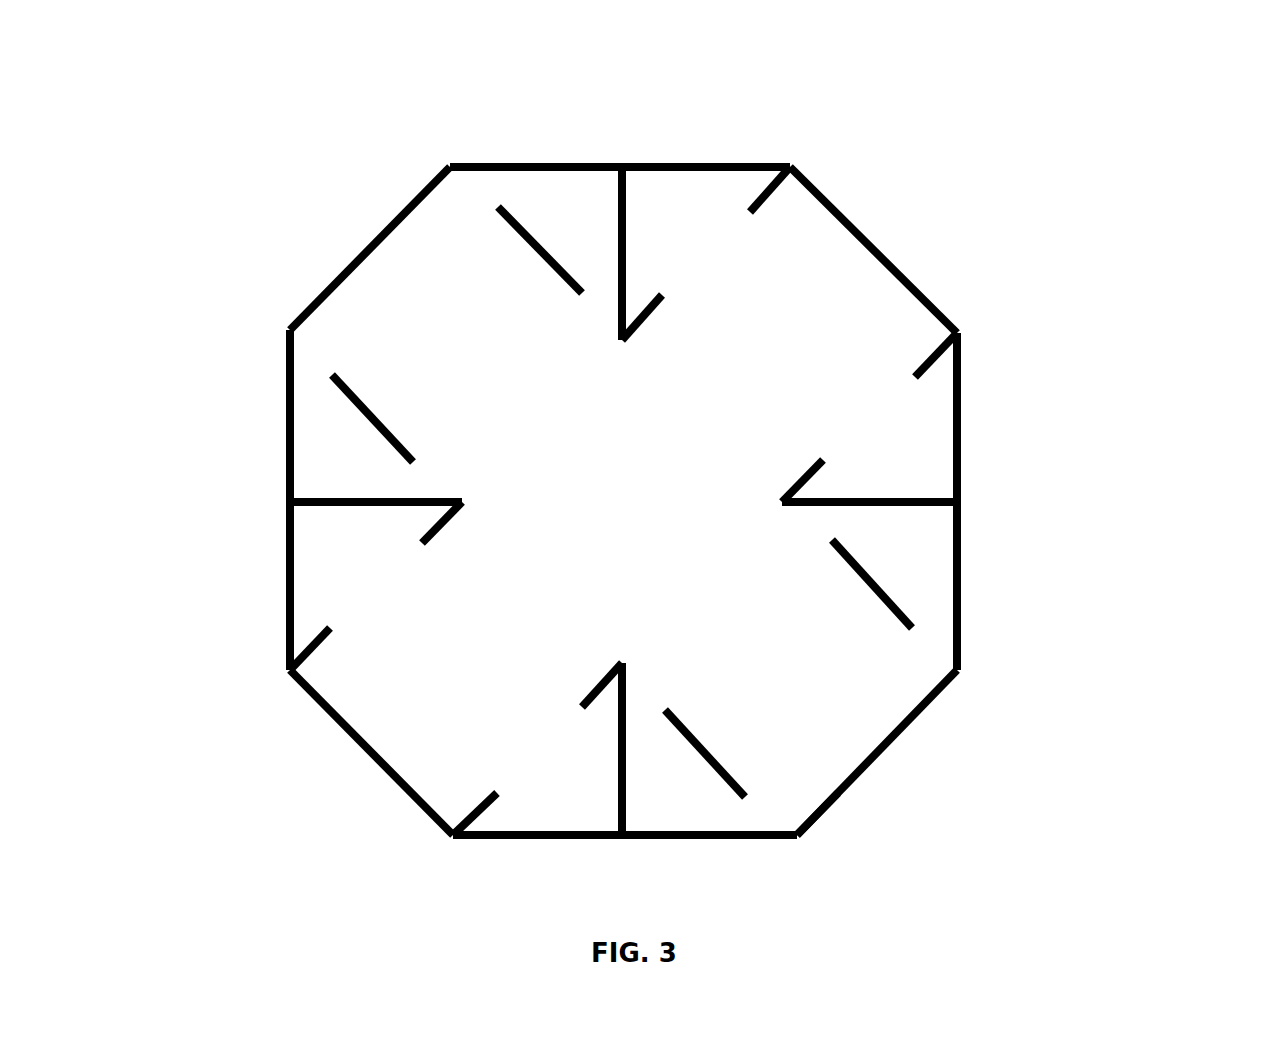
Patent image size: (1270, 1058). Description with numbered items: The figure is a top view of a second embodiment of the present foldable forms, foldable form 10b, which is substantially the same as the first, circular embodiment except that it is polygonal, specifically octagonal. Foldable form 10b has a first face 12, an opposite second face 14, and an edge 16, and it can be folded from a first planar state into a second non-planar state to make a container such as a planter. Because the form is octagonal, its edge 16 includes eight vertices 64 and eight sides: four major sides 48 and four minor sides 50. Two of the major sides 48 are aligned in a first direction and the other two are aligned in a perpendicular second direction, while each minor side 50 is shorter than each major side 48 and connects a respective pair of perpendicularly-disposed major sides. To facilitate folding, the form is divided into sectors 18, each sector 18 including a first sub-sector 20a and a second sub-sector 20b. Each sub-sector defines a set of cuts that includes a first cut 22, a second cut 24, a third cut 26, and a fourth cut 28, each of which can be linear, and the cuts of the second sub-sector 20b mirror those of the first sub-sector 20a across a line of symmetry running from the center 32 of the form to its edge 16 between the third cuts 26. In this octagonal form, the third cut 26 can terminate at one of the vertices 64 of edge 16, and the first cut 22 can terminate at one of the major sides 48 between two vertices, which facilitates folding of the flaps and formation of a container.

The foldable form 10b is at (530, 153).
The first face 12 is at (445, 277).
The second face 14 is at (407, 317).
The edge 16 is at (745, 165).
The sector 18 is at (908, 188).
The first sub-sector 20a is at (643, 141).
The second sub-sector 20b is at (1092, 438).
The first cut 22 is at (885, 503).
The second cut 24 is at (810, 480).
The third cut 26 is at (957, 347).
The fourth cut 28 is at (367, 415).
The center 32 is at (590, 478).
The major side 48 is at (682, 165).
The minor side 50 is at (418, 180).
The vertex 64 is at (960, 672).